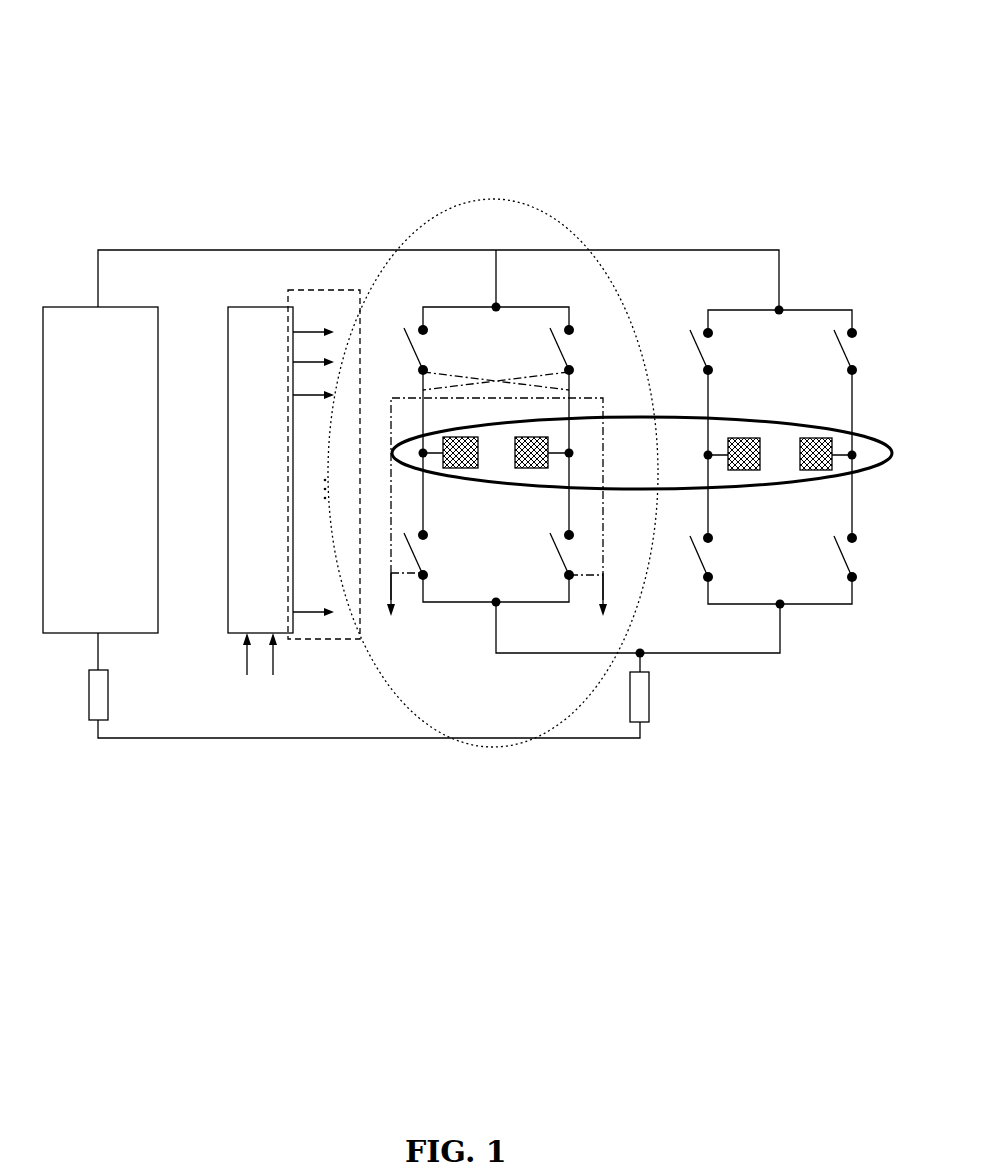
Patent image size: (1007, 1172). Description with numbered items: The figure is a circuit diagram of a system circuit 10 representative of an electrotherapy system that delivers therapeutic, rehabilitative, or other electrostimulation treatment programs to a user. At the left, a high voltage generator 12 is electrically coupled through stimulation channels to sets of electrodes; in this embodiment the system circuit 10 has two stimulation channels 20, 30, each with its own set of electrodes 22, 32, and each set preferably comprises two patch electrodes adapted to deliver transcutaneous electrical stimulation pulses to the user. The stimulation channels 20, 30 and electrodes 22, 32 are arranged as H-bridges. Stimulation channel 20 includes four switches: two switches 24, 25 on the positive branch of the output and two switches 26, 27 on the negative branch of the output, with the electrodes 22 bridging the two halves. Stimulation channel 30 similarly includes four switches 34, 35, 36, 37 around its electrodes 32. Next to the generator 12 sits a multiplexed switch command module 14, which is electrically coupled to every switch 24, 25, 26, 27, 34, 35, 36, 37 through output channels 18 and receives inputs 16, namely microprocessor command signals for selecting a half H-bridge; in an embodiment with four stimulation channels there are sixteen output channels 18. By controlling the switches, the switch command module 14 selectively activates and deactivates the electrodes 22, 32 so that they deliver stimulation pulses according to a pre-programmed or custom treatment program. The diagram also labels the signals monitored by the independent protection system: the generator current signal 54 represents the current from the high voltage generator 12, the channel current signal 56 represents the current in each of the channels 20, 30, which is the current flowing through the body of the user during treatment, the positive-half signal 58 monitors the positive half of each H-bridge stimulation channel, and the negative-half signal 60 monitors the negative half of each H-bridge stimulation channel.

The system circuit 10 is at (558, 104).
The voltage generator 12 is at (57, 307).
The multiplexed switch command module 14 is at (247, 307).
The inputs 16 is at (260, 671).
The output channels 18 is at (318, 290).
The stimulation channel 20 is at (610, 461).
The set of electrodes 22 is at (517, 468).
The switch 24 is at (437, 349).
The switch 25 is at (541, 564).
The switch 26 is at (538, 349).
The switch 27 is at (436, 564).
The stimulation channel 30 is at (748, 415).
The set of electrodes 32 is at (800, 470).
The switch 34 is at (720, 350).
The switch 35 is at (830, 559).
The switch 36 is at (830, 350).
The switch 37 is at (720, 559).
The signal IHT 54 is at (121, 697).
The signal IMES 56 is at (664, 689).
The signal IPH1P 58 is at (584, 613).
The signal IPH1N 60 is at (404, 613).